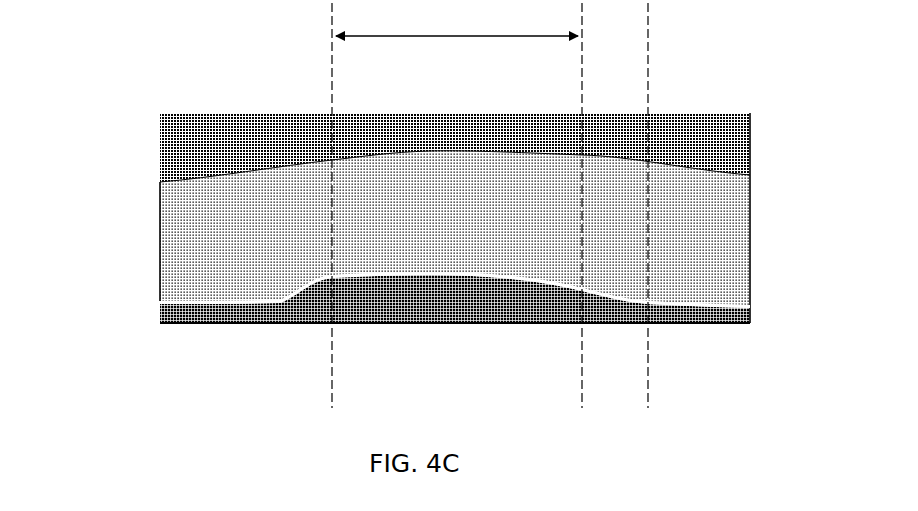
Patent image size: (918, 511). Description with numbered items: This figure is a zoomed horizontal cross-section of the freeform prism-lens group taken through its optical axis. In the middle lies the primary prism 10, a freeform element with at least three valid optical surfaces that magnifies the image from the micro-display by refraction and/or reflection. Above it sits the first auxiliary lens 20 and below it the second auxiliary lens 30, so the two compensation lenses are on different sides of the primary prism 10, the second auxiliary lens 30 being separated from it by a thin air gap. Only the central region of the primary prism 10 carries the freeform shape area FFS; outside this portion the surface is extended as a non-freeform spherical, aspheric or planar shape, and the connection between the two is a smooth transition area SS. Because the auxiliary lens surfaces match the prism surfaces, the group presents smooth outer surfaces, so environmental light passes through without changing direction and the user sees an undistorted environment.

The primary prism 10 is at (157, 243).
The first auxiliary lens 20 is at (157, 152).
The second auxiliary lens 30 is at (157, 313).
The freeform surface portion FFS is at (457, 20).
The smooth transition area SS is at (615, 70).